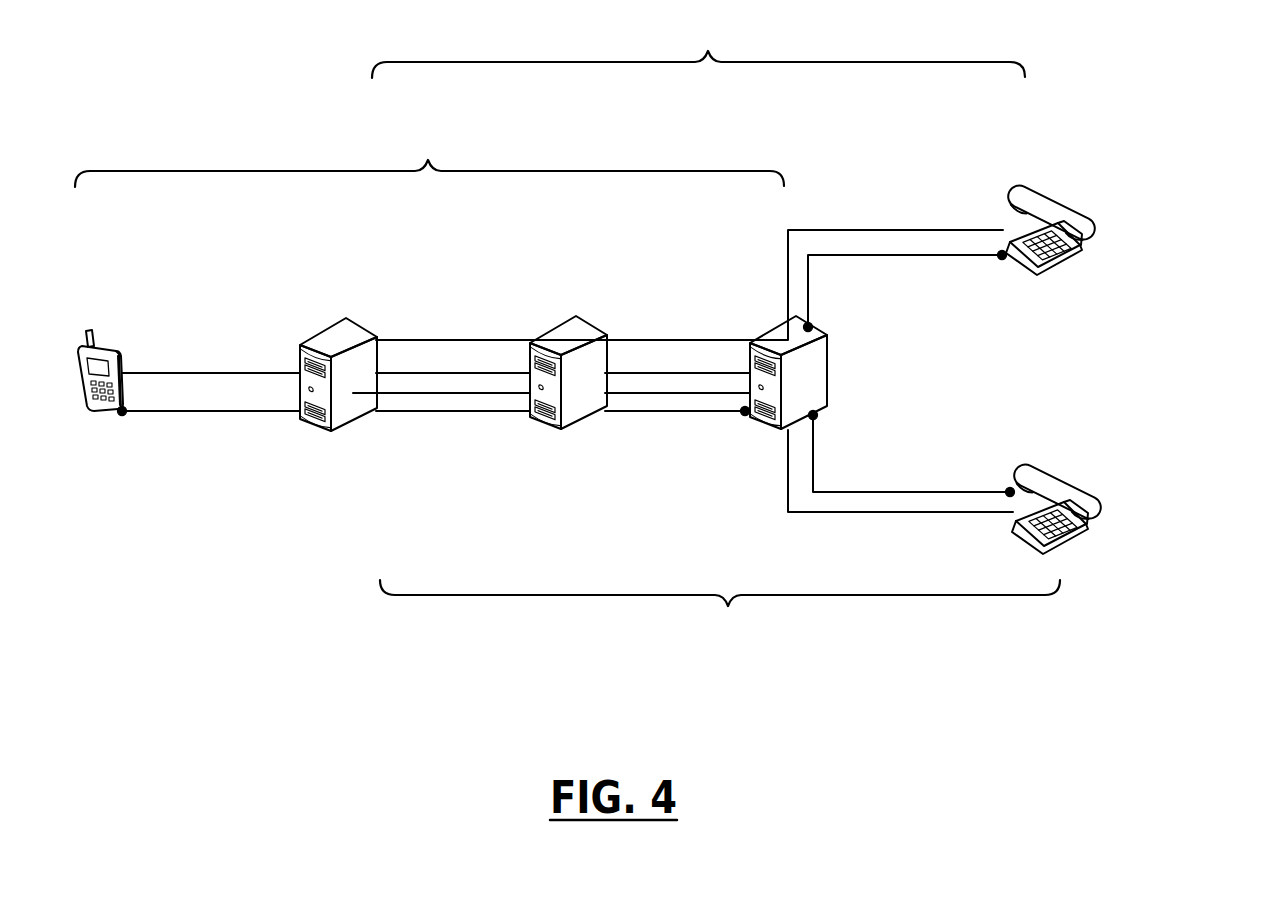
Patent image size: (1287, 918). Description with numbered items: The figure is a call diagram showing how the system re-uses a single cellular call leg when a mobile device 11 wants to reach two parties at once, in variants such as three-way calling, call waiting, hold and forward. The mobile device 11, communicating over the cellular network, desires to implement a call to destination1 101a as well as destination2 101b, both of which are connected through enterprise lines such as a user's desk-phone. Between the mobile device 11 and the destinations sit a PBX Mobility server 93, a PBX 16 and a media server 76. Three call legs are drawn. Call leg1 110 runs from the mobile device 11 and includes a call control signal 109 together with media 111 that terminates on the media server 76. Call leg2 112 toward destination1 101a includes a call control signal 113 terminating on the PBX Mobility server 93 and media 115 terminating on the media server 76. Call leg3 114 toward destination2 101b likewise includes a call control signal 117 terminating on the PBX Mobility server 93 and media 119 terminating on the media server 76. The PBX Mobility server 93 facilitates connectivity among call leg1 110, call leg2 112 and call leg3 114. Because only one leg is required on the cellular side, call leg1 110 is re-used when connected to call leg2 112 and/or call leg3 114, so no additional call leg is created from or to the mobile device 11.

The mobile device 11 is at (118, 345).
The PBX Mobility server 93 is at (353, 332).
The PBX 16 is at (580, 332).
The media server 76 is at (772, 335).
The destination1 101a is at (1063, 200).
The destination2 101b is at (1067, 487).
The call control signal 109 is at (238, 372).
The media 111 is at (218, 412).
The call control signal 113 is at (680, 338).
The media 115 is at (858, 256).
The call control signal 117 is at (470, 393).
The media 119 is at (957, 492).
The call leg1 110 is at (429, 153).
The call leg2 112 is at (698, 45).
The call leg3 114 is at (720, 615).